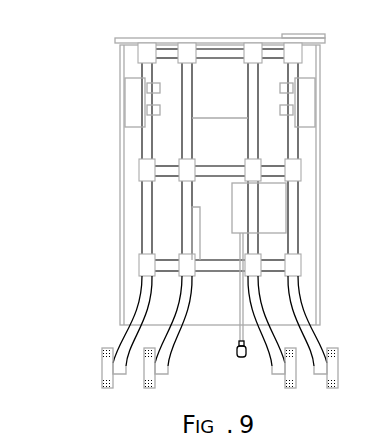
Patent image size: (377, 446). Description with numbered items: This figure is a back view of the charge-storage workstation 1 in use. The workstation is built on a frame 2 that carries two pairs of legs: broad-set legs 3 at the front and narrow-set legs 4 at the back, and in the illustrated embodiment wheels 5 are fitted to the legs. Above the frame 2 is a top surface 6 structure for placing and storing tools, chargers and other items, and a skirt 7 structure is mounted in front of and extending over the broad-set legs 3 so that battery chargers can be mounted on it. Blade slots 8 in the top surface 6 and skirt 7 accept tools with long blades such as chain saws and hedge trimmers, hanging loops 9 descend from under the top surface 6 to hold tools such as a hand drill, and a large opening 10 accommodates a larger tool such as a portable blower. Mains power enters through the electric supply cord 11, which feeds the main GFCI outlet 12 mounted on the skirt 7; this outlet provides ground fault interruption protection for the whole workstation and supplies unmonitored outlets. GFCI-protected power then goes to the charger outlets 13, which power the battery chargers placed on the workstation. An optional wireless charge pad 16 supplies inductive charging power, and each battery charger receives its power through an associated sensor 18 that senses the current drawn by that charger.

The charge-storage workstation 1 is at (45, 34).
The frame 2 is at (157, 270).
The broad-set legs 3 is at (132, 343).
The narrow-set legs 4 is at (174, 345).
The wheels 5 is at (106, 370).
The top surface 6 is at (206, 39).
The skirt 7 is at (123, 279).
The blade slots 8 is at (200, 230).
The hanging loops 9 is at (320, 58).
The large opening 10 is at (212, 120).
The electric supply cord 11 is at (238, 343).
The main GFCI outlet 12 is at (233, 202).
The charger outlets 13 is at (130, 93).
The wireless charge pad 16 is at (313, 33).
The sensor 18 is at (156, 88).